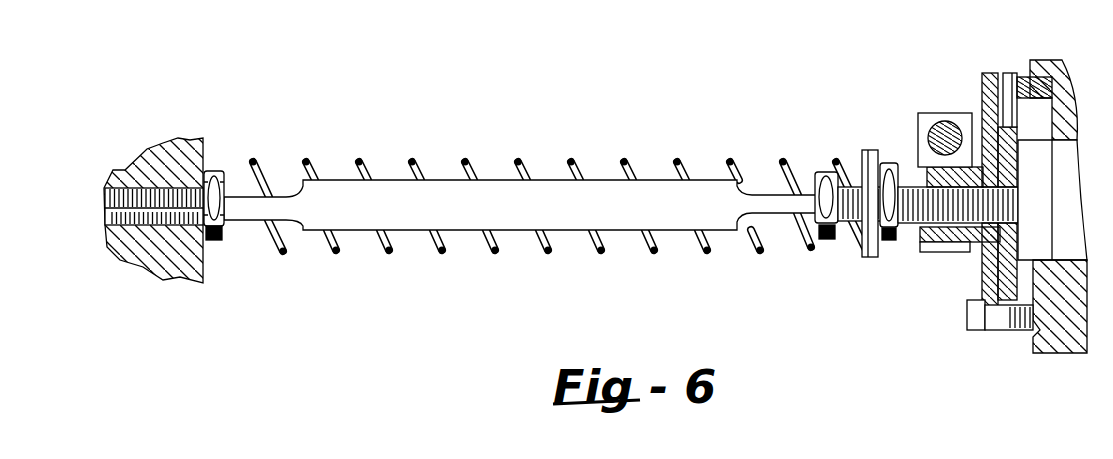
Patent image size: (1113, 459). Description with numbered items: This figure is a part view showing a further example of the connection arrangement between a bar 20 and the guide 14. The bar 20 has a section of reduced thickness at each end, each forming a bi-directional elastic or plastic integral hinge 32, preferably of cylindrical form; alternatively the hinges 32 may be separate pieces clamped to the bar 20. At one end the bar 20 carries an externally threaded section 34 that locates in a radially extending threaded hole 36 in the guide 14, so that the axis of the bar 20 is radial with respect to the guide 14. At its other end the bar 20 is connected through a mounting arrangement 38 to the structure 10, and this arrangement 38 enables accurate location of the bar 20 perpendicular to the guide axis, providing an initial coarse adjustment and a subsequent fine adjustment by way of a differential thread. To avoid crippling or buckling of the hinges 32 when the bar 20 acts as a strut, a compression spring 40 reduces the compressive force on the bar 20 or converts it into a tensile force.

The mounting wall 10 is at (1066, 64).
The guide 14 is at (185, 140).
The bar 20 is at (614, 231).
The integral hinge 32 is at (778, 214).
The externally threaded section 34 is at (183, 188).
The threaded hole 36 is at (105, 192).
The mounting arrangement 38 is at (960, 96).
The compression spring 40 is at (465, 160).